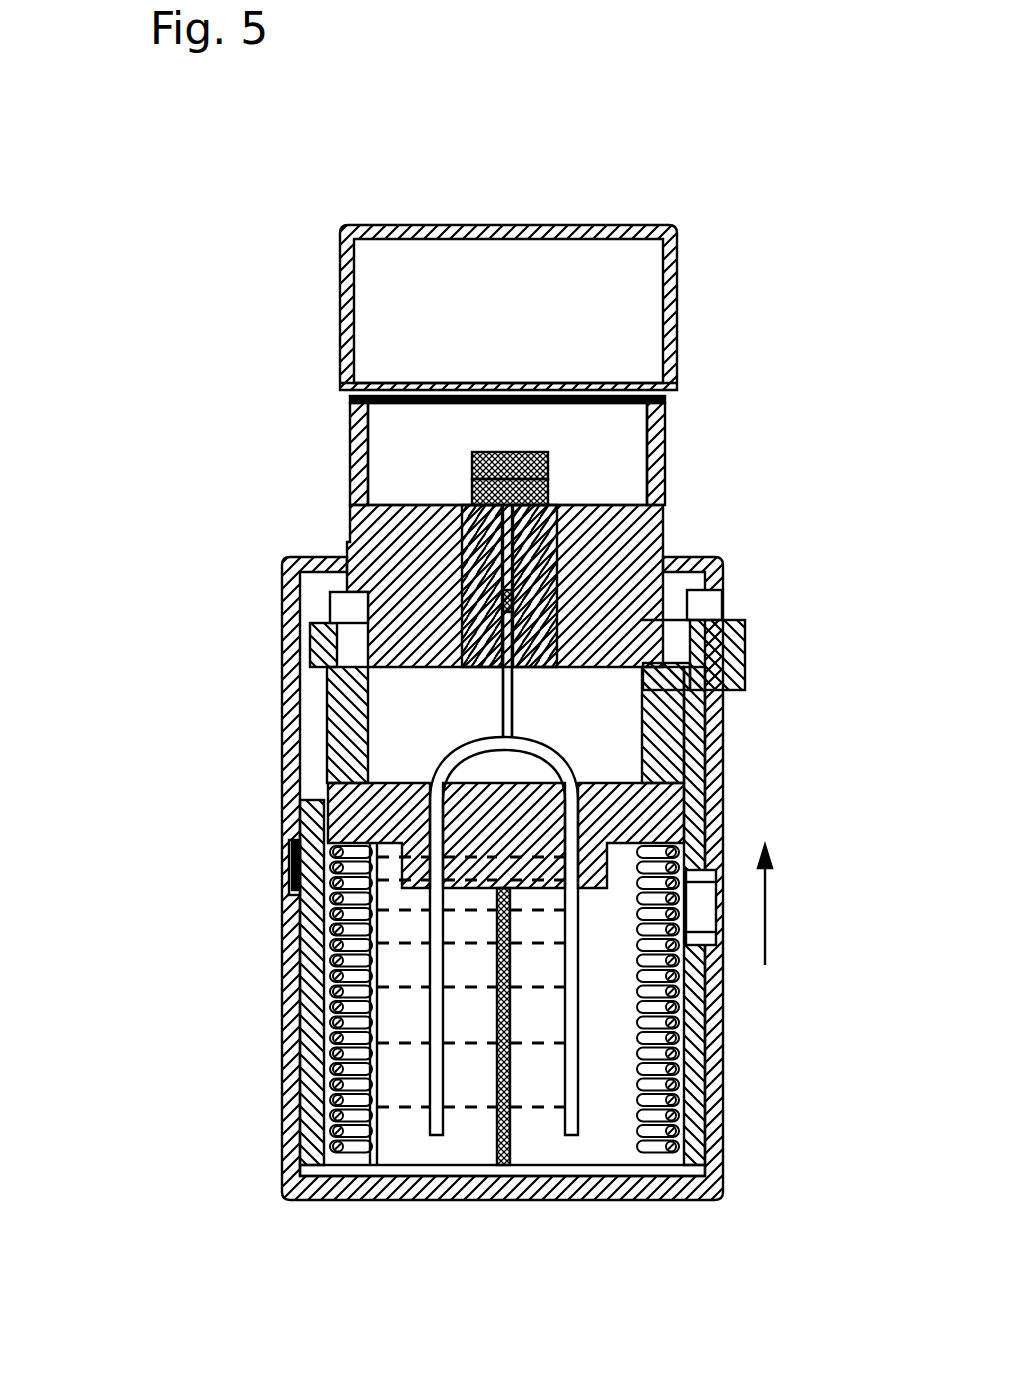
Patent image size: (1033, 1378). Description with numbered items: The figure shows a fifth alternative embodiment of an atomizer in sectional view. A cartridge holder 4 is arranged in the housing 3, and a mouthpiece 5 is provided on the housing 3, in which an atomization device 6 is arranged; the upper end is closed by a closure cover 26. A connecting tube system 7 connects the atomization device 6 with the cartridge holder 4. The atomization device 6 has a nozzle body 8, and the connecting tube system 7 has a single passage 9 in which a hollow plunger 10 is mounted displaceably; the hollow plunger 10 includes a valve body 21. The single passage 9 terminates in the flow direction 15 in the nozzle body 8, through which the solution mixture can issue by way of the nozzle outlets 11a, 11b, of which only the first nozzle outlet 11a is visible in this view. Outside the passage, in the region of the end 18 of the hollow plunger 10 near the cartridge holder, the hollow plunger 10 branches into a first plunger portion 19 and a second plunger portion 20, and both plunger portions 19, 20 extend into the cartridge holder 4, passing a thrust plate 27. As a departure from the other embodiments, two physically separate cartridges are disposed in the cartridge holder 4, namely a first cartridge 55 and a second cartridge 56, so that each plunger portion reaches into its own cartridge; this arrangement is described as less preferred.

The housing 3 is at (287, 852).
The cartridge holder 4 is at (324, 1093).
The mouthpiece 5 is at (664, 422).
The atomization device 6 is at (428, 440).
The connecting tube system 7 is at (697, 700).
The nozzle body 8 is at (560, 456).
The passage 9 is at (470, 545).
The hollow plunger 10 is at (500, 687).
The first nozzle outlet 11a is at (507, 452).
The second nozzle outlet 11b is at (550, 458).
The flow direction 15 is at (766, 910).
The end of the hollow plunger near the cartridge holder 18 is at (493, 734).
The first plunger portion 19 is at (440, 1013).
The second plunger portion 20 is at (570, 1013).
The valve body 21 is at (664, 532).
The closure cover 26 is at (405, 292).
The thrust plate 27 is at (662, 790).
The first cartridge 55 is at (397, 1150).
The second cartridge 56 is at (595, 1148).